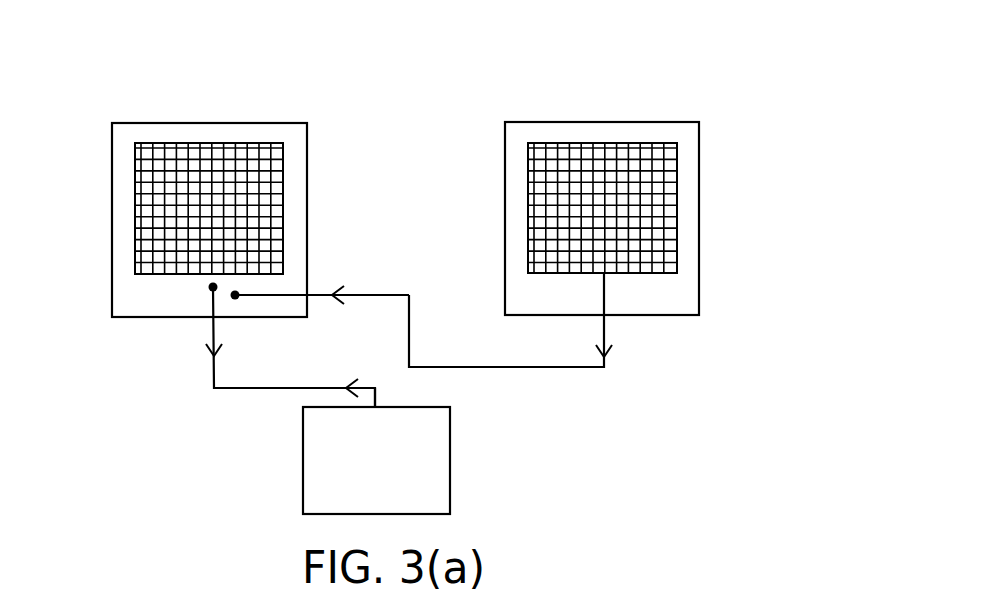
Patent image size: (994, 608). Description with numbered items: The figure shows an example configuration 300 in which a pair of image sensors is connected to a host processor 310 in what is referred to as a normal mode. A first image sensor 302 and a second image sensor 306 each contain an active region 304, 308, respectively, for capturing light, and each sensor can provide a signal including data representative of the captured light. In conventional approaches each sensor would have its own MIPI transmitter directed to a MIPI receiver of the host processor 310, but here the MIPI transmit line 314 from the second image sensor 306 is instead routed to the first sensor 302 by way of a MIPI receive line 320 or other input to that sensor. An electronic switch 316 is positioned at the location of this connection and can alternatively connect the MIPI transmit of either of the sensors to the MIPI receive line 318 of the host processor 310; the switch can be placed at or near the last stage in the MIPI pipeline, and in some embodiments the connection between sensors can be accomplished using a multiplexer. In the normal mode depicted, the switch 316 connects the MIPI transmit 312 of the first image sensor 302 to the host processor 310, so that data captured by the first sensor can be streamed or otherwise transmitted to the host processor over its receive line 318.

The example configuration 300 is at (768, 86).
The first image sensor 302 is at (113, 140).
The active region 304 is at (136, 227).
The second image sensor 306 is at (506, 138).
The active region 308 is at (529, 223).
The host processor 310 is at (302, 494).
The MIPI transmit 312 is at (213, 333).
The MIPI transmit line 314 is at (605, 327).
The electronic switch 316 is at (196, 304).
The MIPI receive line 318 is at (376, 392).
The MIPI receive line 320 is at (317, 294).